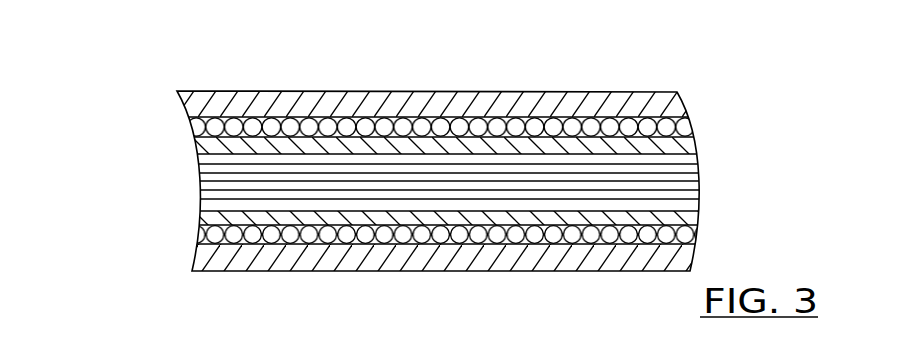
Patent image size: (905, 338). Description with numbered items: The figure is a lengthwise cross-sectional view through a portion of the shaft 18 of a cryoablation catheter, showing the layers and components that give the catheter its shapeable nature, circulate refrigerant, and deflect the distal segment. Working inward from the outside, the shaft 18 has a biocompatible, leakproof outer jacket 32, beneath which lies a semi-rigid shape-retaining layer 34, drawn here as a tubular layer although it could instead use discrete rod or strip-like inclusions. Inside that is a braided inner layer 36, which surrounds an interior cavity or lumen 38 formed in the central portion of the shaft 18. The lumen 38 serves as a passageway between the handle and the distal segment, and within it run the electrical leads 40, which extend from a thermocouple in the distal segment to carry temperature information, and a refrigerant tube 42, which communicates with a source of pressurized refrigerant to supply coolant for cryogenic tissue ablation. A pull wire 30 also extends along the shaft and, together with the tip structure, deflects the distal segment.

The shaft 18 is at (582, 81).
The pull wire 30 is at (248, 198).
The outer jacket 32 is at (247, 93).
The shape-retaining layer 34 is at (408, 125).
The braided inner layer 36 is at (197, 147).
The lumen 38 is at (430, 189).
The electrical leads 40 is at (198, 160).
The refrigerant tube 42 is at (197, 182).